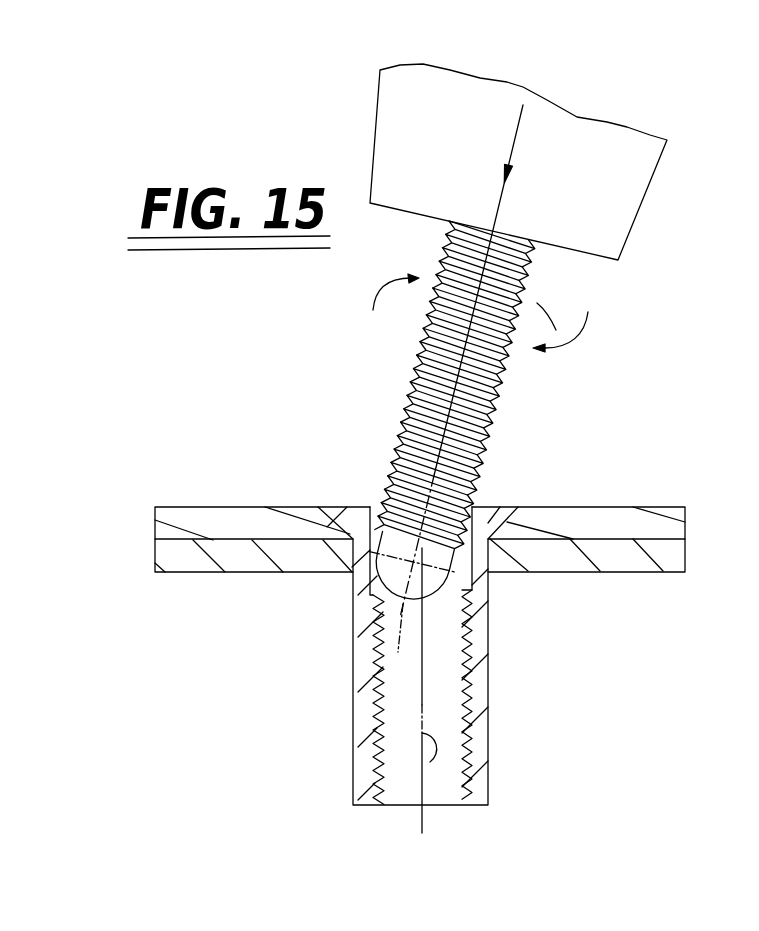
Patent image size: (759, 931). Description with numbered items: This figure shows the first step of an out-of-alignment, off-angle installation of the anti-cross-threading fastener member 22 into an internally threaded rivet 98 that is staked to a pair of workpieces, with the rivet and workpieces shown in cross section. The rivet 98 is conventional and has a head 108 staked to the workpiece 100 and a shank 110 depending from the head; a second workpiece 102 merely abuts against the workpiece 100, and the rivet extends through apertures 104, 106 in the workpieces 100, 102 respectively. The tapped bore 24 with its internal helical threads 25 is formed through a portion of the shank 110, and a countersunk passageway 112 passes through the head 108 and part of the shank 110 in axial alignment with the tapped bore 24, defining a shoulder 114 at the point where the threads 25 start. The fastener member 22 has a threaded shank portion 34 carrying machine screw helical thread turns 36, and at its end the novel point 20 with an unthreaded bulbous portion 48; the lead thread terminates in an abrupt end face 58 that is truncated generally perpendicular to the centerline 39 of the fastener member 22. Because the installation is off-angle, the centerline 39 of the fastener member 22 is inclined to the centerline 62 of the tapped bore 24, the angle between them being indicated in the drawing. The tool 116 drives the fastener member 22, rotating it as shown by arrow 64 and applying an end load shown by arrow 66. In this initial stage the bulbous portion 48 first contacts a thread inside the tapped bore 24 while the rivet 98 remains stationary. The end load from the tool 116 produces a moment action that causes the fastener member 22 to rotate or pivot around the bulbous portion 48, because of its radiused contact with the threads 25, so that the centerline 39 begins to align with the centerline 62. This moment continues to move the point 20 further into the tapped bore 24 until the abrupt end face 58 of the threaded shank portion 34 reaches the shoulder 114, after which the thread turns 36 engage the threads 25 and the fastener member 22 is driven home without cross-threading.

The point 20 is at (438, 650).
The fastener member 22 is at (459, 440).
The tapped bore 24 is at (386, 797).
The internal helical threads 25 is at (456, 790).
The threaded shank portion 34 is at (430, 385).
The helical thread turns 36 is at (400, 428).
The centerline of the fastener member 39 is at (396, 639).
The bulbous portion 48 is at (432, 600).
The abrupt end face 58 is at (477, 552).
The centerline of the tapped bore 62 is at (428, 757).
The arrow indicating rotation 64 is at (489, 313).
The arrow indicating end load 66 is at (517, 145).
The rivet 98 is at (358, 712).
The workpiece 100 is at (245, 521).
The second workpiece 102 is at (200, 566).
The aperture 104 is at (500, 523).
The aperture 106 is at (488, 548).
The head of the rivet 108 is at (493, 512).
The shank of the rivet 110 is at (478, 763).
The countersunk passageway 112 is at (371, 520).
The shoulder 114 is at (480, 612).
The tool 116 is at (632, 183).